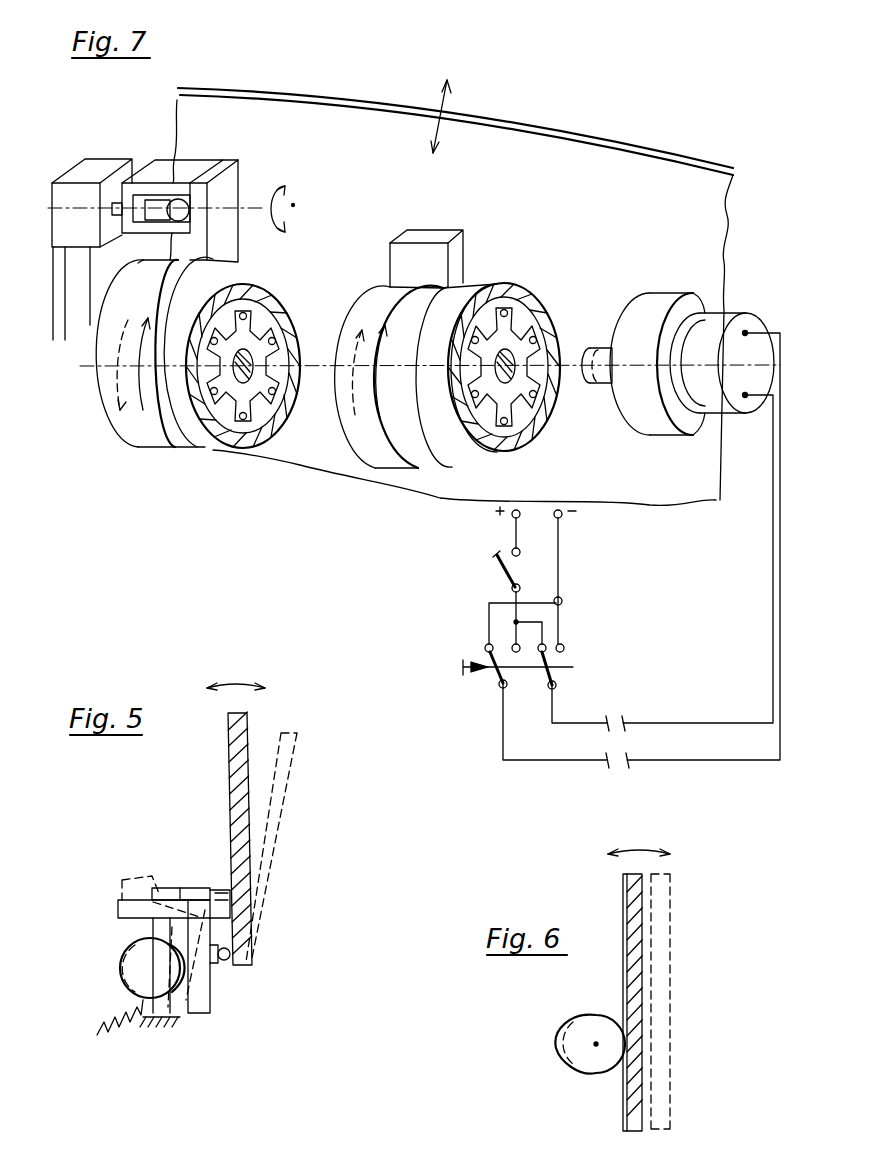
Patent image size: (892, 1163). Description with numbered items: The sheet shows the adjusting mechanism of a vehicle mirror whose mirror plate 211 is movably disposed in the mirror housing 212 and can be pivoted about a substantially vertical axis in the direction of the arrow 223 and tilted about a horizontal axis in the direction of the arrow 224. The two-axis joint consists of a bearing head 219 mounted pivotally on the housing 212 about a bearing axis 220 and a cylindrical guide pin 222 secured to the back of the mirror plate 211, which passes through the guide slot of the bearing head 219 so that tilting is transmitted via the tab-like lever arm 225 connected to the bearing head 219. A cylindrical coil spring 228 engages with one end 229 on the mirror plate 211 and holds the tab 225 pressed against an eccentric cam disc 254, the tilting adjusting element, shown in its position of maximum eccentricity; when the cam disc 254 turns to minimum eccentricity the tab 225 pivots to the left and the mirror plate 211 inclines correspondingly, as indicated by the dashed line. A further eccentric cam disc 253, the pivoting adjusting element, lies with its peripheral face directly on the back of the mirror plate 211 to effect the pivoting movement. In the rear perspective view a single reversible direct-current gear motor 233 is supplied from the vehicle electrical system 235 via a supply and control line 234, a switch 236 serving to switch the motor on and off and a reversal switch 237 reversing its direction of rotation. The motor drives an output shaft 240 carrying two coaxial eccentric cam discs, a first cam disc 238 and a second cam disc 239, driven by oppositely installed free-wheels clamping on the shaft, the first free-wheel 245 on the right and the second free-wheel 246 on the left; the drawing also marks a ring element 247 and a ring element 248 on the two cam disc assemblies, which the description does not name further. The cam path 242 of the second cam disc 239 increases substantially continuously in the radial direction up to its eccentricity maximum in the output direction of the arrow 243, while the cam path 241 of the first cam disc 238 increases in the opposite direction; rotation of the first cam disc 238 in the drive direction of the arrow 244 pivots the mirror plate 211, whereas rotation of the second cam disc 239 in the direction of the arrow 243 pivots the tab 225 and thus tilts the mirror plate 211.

In FIG. 7, the mirror plate 211 is at (356, 179).
In FIG. 5, the mirror plate 211 is at (268, 815).
In FIG. 6, the mirror plate 211 is at (637, 955).
In FIG. 5, the mirror housing 212 is at (167, 1023).
In FIG. 7, the bearing head 219 is at (186, 167).
In FIG. 5, the bearing head 219 is at (211, 890).
In FIG. 7, the bearing axis 220 is at (293, 205).
In FIG. 5, the bearing axis 220 is at (180, 898).
In FIG. 5, the guide pin 222 is at (135, 885).
In FIG. 6, the arrow (pivoting direction) 223 is at (643, 848).
In FIG. 5, the arrow (tilting direction) 224 is at (240, 685).
In FIG. 7, the tab-like lever arm 225 is at (227, 183).
In FIG. 5, the tab-like lever arm 225 is at (205, 1003).
In FIG. 5, the cylindrical coil spring 228 is at (122, 1023).
In FIG. 5, the spring end 229 is at (230, 960).
In FIG. 7, the electric gear motor 233 is at (656, 300).
In FIG. 7, the supply and control line 234 is at (772, 590).
In FIG. 7, the vehicle electrical system 235 is at (503, 513).
In FIG. 7, the switch 236 is at (508, 578).
In FIG. 7, the reversal switch 237 is at (482, 667).
In FIG. 7, the first cam disc 238 is at (418, 450).
In FIG. 7, the second cam disc 239 is at (163, 453).
In FIG. 7, the output shaft 240 is at (253, 358).
In FIG. 7, the cam path of first cam disc 241 is at (387, 458).
In FIG. 7, the cam path of second cam disc 242 is at (150, 273).
In FIG. 7, the arrow (first/second output direction of rotation) 243 is at (143, 403).
In FIG. 7, the arrow (first drive direction) 244 is at (122, 378).
In FIG. 7, the first free-wheel 245 is at (515, 352).
In FIG. 7, the second free-wheel 246 is at (257, 427).
In FIG. 7, the stator ring 247 is at (462, 290).
In FIG. 7, the stator ring 248 is at (210, 285).
In FIG. 6, the eccentric cam disc (pivoting adjusting element) 253 is at (587, 1057).
In FIG. 5, the eccentric cam disc (tilting adjusting element) 254 is at (138, 948).